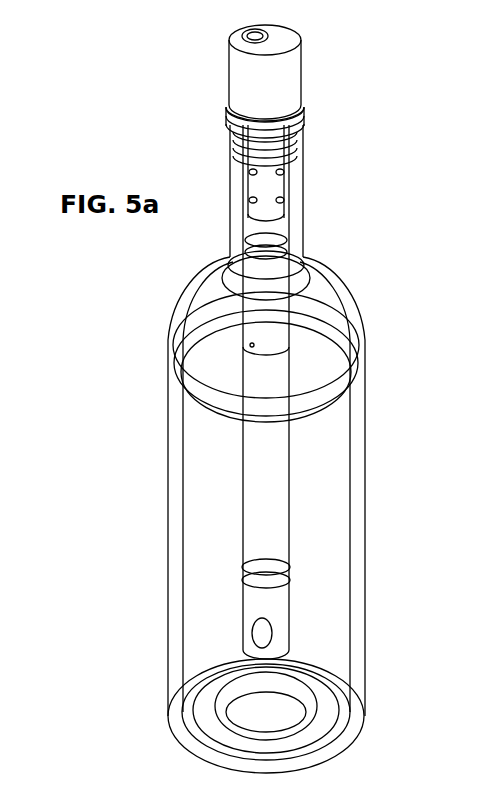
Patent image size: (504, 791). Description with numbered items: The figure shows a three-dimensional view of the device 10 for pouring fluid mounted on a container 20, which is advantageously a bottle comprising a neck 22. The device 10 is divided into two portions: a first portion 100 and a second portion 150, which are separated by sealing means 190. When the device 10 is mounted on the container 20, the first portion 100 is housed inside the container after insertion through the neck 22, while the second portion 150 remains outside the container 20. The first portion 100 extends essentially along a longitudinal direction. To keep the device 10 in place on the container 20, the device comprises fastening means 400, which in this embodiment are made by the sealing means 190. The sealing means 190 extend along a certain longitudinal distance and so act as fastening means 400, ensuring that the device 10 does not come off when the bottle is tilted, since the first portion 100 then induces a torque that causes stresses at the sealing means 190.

The device for pouring fluid 10 is at (455, 282).
The container 20 is at (366, 513).
The neck 22 is at (305, 201).
The first portion 100 is at (262, 500).
The second portion 150 is at (293, 80).
The sealing means 190 is at (300, 118).
The fastening means 400 is at (265, 114).